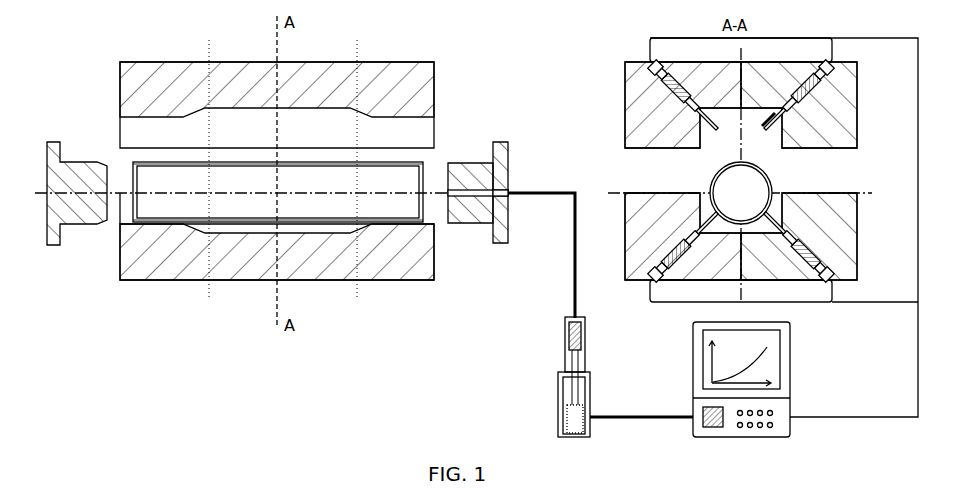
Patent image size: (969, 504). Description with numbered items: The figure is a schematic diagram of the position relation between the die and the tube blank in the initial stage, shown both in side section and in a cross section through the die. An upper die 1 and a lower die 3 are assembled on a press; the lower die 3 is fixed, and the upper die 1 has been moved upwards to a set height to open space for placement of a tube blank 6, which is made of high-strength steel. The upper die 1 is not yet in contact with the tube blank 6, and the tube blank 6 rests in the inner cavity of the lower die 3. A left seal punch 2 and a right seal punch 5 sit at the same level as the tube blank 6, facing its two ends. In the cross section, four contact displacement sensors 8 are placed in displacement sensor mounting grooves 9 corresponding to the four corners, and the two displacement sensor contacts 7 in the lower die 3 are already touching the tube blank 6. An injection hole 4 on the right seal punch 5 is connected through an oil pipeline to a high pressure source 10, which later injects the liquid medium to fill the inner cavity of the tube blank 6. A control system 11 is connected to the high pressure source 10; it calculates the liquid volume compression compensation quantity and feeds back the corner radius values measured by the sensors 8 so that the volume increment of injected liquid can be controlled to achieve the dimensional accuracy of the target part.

The upper die 1 is at (140, 114).
The left seal punch 2 is at (52, 162).
The lower die 3 is at (145, 236).
The injection hole 4 is at (497, 243).
The right seal punch 5 is at (506, 152).
The tube blank 6 is at (425, 162).
The displacement sensor contact 7 is at (836, 150).
The contact displacement sensor 8 is at (795, 106).
The displacement sensor mounting groove 9 is at (836, 64).
The high pressure source 10 is at (587, 352).
The control system 11 is at (791, 350).